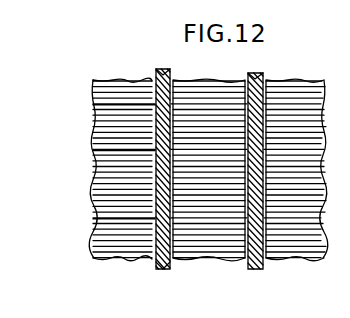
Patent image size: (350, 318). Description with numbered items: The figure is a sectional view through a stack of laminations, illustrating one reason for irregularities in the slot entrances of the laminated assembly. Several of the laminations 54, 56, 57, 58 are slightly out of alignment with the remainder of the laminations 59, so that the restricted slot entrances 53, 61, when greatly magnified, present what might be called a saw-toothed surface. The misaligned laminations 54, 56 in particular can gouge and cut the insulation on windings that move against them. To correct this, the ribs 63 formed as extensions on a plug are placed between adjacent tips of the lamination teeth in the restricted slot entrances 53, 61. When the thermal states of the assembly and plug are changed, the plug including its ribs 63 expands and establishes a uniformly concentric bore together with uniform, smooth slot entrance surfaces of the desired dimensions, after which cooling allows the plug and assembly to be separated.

The lamination 54 is at (93, 86).
The lamination 58 is at (93, 104).
The lamination 57 is at (93, 150).
The laminations 59 is at (93, 183).
The lamination 56 is at (93, 216).
The ribs 63 is at (170, 72).
The restricted slot entrance 61 is at (167, 270).
The restricted slot entrance 53 is at (265, 261).